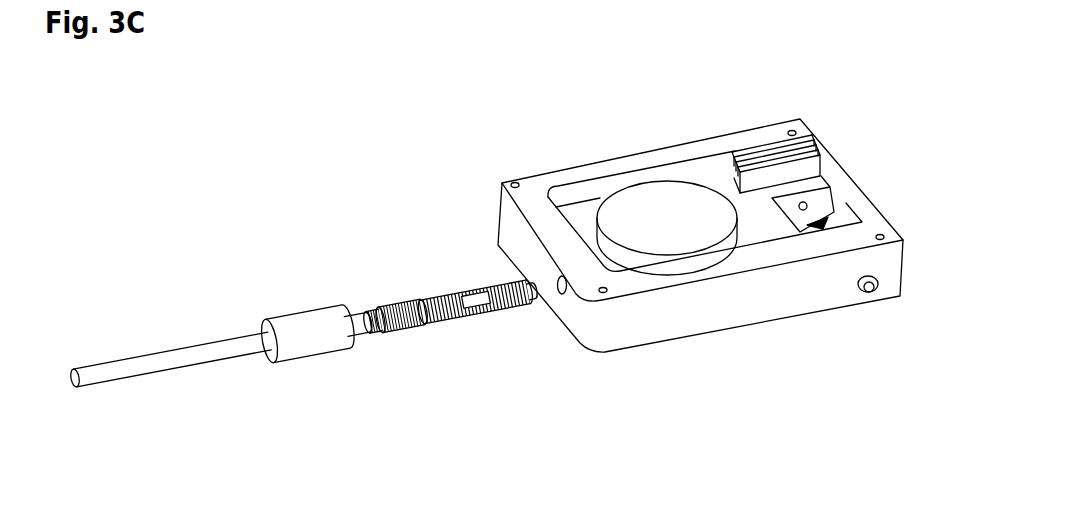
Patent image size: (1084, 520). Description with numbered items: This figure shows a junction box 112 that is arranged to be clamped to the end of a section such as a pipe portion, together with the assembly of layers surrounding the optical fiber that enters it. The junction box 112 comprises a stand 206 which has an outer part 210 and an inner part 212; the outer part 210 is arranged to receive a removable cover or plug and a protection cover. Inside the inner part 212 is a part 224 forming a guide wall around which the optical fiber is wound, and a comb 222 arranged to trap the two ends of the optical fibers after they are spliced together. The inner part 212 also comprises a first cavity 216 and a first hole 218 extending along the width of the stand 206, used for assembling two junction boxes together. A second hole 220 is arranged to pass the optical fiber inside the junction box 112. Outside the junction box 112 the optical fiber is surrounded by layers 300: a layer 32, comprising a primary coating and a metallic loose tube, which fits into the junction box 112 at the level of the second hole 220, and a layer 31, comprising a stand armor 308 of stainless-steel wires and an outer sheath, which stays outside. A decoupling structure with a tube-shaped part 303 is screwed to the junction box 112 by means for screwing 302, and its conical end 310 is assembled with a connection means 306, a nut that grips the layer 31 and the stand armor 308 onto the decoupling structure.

The layers 300 is at (110, 362).
The connection means 306 is at (285, 315).
The layer 31 is at (362, 326).
The stand armor 308 is at (398, 322).
The end of the decoupling structure 310 is at (423, 303).
The tube-shaped part 303 is at (513, 343).
The means for screwing 302 is at (513, 343).
The layer 32 is at (530, 293).
The second hole 220 is at (557, 283).
The part forming a guide wall 224 is at (640, 210).
The inner part 212 is at (723, 188).
The comb 222 is at (820, 160).
The first hole 218 is at (809, 205).
The first cavity 216 is at (838, 219).
The junction box 112 is at (700, 259).
The outer part 210 is at (700, 259).
The stand 206 is at (732, 302).